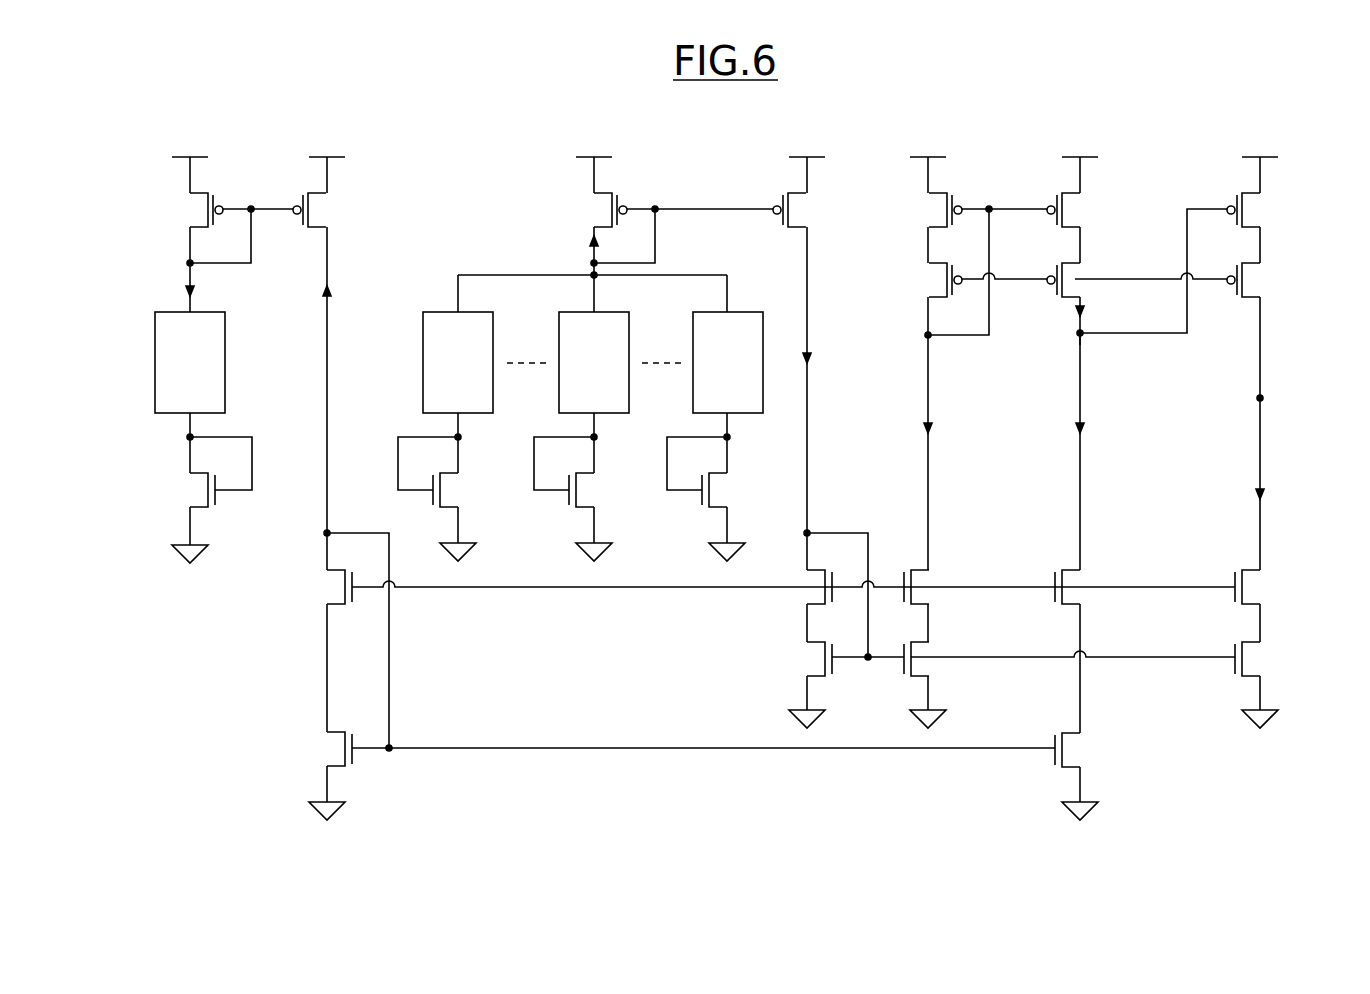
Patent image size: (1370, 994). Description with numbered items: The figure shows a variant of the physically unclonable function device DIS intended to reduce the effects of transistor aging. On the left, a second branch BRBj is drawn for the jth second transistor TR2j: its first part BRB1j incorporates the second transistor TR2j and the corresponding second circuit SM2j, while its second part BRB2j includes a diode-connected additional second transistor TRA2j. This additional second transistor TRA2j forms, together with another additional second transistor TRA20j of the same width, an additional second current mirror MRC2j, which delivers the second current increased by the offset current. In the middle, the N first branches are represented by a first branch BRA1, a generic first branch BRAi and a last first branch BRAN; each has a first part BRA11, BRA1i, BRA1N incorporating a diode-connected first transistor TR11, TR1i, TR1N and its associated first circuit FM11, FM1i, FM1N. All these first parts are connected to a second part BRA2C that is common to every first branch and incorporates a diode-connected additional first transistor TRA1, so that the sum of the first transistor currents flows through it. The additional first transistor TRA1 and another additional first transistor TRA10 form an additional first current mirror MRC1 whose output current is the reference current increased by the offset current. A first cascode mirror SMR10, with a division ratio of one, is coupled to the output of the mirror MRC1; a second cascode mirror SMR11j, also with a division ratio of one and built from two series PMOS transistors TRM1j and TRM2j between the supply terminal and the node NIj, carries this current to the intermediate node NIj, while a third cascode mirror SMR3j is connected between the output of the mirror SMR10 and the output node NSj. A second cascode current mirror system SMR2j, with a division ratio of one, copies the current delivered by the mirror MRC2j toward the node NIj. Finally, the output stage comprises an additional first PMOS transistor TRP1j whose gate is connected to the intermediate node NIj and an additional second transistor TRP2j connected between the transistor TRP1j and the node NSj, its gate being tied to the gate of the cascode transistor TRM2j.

The second branch BRBj is at (188, 128).
The additional second current mirror MRC2j is at (362, 135).
The additional second transistor TRA2j is at (228, 198).
The another additional second transistor TRA20j is at (343, 180).
The second part of the second branch BRB2j is at (180, 228).
The second circuit SM2j is at (153, 365).
The first part of the second branch BRB1j is at (180, 425).
The second transistor TR2j is at (197, 495).
The additional first current mirror MRC1 is at (700, 145).
The additional first transistor TRA1 is at (580, 215).
The another additional first transistor TRA10 is at (787, 232).
The second part of the first branches BRA2C is at (670, 259).
The first branch BRA1 is at (470, 178).
The first branch BRAi is at (630, 165).
The first branch BRAN is at (742, 200).
The first circuit FM11 is at (458, 362).
The first circuit FM1i is at (594, 362).
The first circuit FM1N is at (728, 362).
The first part of the first branch BRA11 is at (483, 418).
The first part of the first branch BRA1i is at (619, 418).
The first part of the first branch BRA1N is at (753, 418).
The first transistor TR11 is at (425, 500).
The first transistor TR1i is at (561, 500).
The first transistor TR1N is at (694, 500).
The second cascode mirror SMR11j is at (990, 165).
The physically unclonable function device DIS is at (1178, 133).
The PMOS transistor TRM1j is at (1086, 196).
The cascode transistor TRM2j is at (1086, 266).
The additional first PMOS transistor TRP1j is at (1260, 196).
The additional second transistor TRP2j is at (1260, 266).
The intermediate node NIj is at (1095, 348).
The output node NSj is at (1277, 398).
The first cascode mirror SMR10 is at (952, 563).
The second cascode current mirror system SMR2j is at (687, 765).
The third cascode mirror SMR3j is at (1175, 705).